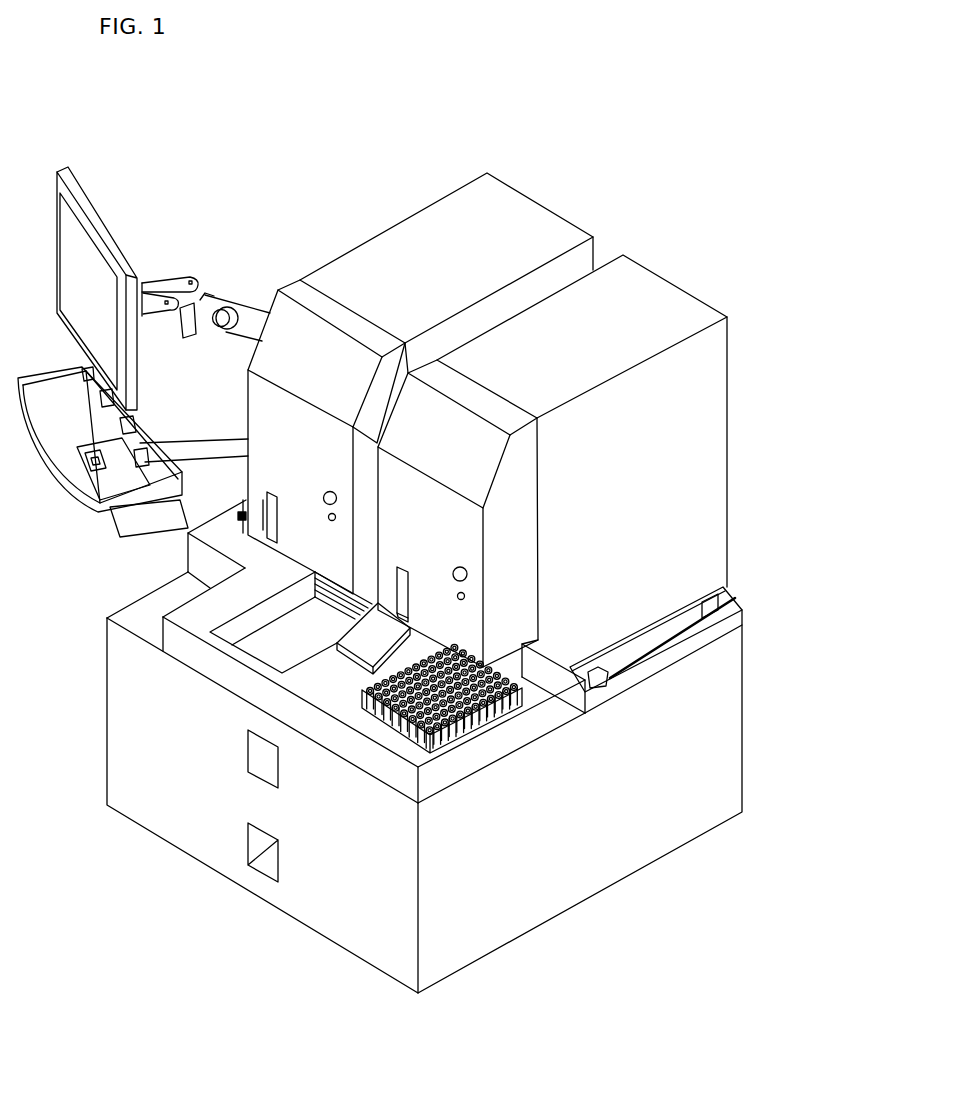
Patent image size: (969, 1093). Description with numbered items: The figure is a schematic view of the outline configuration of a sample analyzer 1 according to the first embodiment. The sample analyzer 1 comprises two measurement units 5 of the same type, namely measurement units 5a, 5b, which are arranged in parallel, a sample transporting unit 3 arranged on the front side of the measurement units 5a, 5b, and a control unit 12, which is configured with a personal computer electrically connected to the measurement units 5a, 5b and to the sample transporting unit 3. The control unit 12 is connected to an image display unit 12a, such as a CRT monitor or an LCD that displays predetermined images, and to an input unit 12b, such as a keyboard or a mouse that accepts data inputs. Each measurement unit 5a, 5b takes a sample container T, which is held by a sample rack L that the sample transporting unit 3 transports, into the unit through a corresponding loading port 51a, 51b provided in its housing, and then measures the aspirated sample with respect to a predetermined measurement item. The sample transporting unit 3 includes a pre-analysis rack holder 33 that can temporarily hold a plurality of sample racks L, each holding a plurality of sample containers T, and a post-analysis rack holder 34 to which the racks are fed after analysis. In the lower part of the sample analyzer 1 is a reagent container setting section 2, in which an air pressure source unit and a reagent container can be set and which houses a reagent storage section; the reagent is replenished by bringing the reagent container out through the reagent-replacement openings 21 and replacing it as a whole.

The sample analyzer 1 is at (627, 138).
The control unit 12 is at (133, 198).
The image display unit 12a is at (85, 267).
The input unit 12b is at (78, 423).
The measurement unit 5 is at (482, 384).
The measurement unit 5a is at (523, 215).
The measurement unit 5b is at (655, 297).
The loading port 51a is at (276, 510).
The loading port 51b is at (400, 588).
The sample transporting unit 3 is at (480, 760).
The pre-analysis rack holder 33 is at (540, 678).
The post-analysis rack holder 34 is at (283, 645).
The sample container T is at (355, 683).
The sample rack L is at (447, 750).
The reagent container setting section 2 is at (672, 830).
The reagent-replacement opening 21 is at (272, 772).